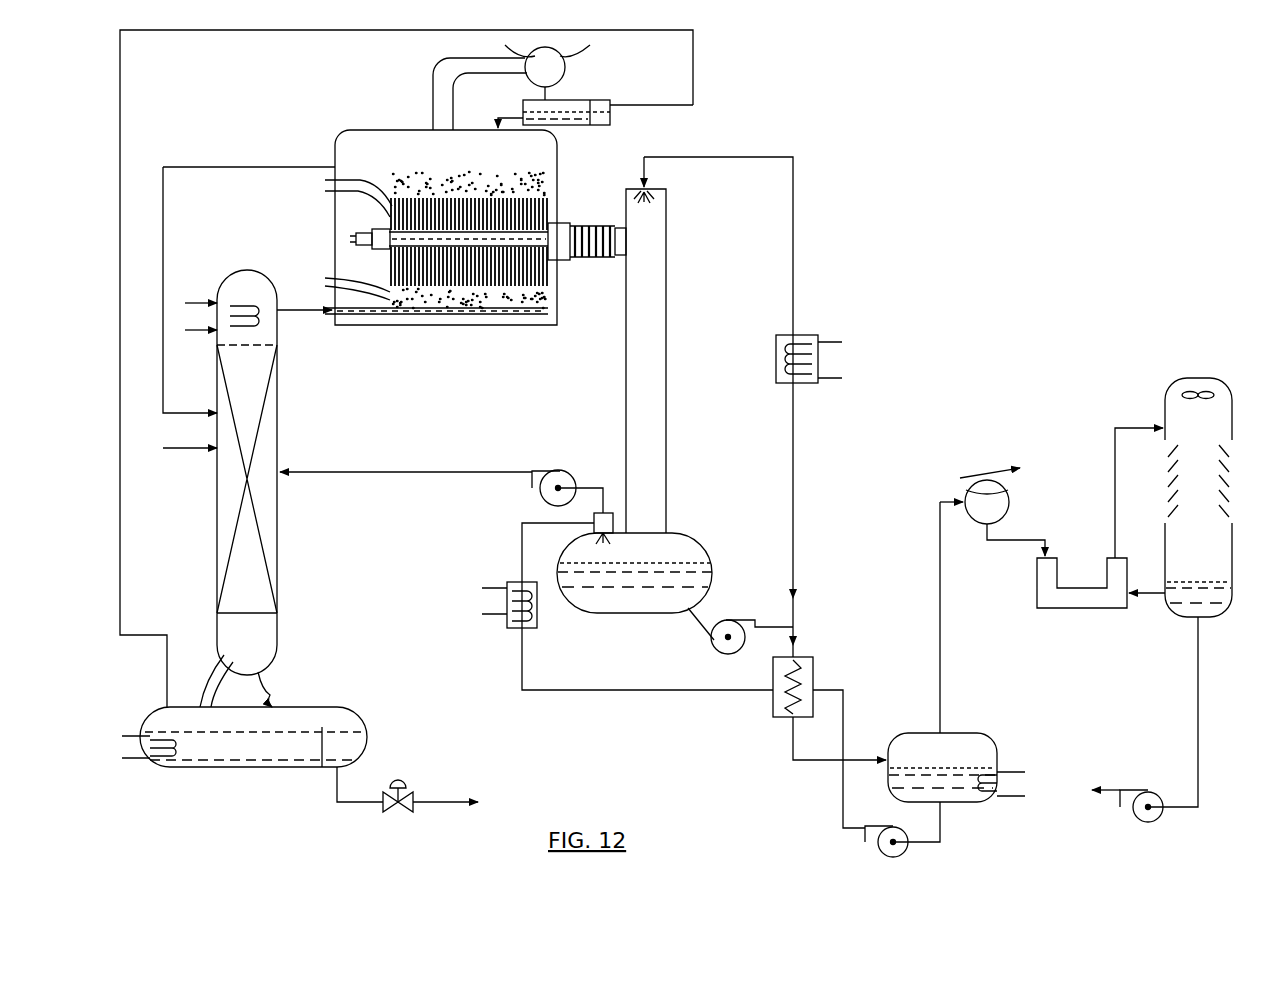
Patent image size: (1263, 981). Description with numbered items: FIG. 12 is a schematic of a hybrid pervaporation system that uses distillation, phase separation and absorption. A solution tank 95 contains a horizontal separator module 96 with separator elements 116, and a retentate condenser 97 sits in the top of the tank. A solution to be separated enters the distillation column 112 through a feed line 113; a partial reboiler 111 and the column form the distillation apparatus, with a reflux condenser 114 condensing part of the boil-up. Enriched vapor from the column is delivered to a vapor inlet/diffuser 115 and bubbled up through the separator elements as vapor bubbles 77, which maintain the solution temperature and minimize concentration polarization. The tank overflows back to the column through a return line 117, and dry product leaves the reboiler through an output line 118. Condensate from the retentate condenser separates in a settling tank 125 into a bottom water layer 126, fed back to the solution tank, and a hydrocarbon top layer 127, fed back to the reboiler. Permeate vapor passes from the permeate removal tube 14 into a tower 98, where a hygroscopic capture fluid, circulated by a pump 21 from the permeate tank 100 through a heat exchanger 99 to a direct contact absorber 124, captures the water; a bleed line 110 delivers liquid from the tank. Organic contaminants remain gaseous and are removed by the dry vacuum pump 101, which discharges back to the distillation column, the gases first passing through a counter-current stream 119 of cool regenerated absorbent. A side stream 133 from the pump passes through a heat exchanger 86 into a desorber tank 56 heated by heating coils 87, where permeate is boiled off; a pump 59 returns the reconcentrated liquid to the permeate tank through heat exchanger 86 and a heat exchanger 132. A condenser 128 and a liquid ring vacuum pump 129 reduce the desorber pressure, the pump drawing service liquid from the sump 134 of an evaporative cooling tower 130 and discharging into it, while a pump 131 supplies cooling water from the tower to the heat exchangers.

The permeate removal tube 14 is at (548, 262).
The pump 21 is at (718, 652).
The desorber tank 56 is at (990, 735).
The pump 59 is at (904, 852).
The vapor bubbles 77 is at (343, 279).
The heat exchanger 86 is at (813, 672).
The heating coils 87 is at (1010, 768).
The solution tank 95 is at (557, 148).
The horizontal separator module 96 is at (549, 188).
The retentate condenser 97 is at (566, 62).
The tower 98 is at (624, 372).
The chiller 99 is at (776, 352).
The permeate tank 100 is at (647, 606).
The vacuum pump 101 is at (550, 470).
The bleed line 110 is at (692, 608).
The partial reboiler 111 is at (356, 712).
The distillation column 112 is at (280, 530).
The feed line 113 is at (183, 452).
The reflux condenser 114 is at (248, 282).
The vapor inlet/diffuser 115 is at (366, 316).
The separator elements 116 is at (340, 194).
The return line 117 is at (193, 170).
The output line 118 is at (437, 800).
The counter-current stream 119 is at (590, 550).
The direct contact absorber 124 is at (655, 205).
The settling tank 125 is at (603, 80).
The water layer 126 is at (612, 118).
The hydrocarbon top layer 127 is at (603, 104).
The condenser 128 is at (965, 488).
The liquid ring vacuum pump 129 is at (1037, 584).
The evaporative cooling tower 130 is at (1165, 408).
The pump 131 is at (1152, 792).
The heat exchanger 132 is at (511, 582).
The side stream 133 is at (797, 632).
The sump 134 is at (1180, 608).